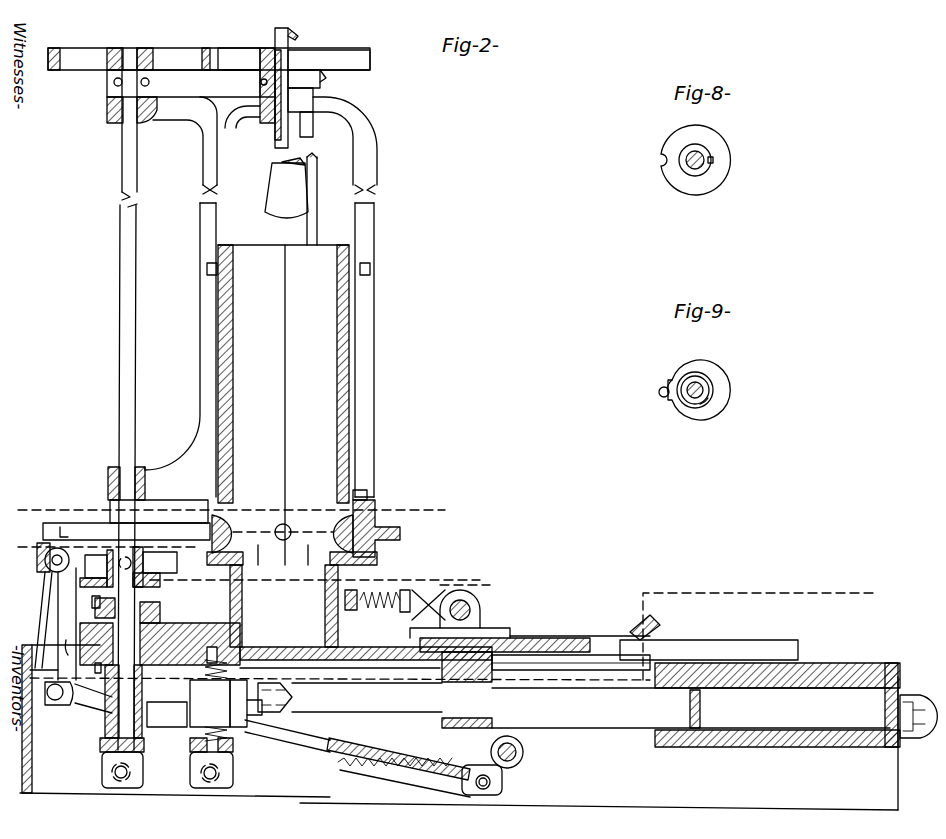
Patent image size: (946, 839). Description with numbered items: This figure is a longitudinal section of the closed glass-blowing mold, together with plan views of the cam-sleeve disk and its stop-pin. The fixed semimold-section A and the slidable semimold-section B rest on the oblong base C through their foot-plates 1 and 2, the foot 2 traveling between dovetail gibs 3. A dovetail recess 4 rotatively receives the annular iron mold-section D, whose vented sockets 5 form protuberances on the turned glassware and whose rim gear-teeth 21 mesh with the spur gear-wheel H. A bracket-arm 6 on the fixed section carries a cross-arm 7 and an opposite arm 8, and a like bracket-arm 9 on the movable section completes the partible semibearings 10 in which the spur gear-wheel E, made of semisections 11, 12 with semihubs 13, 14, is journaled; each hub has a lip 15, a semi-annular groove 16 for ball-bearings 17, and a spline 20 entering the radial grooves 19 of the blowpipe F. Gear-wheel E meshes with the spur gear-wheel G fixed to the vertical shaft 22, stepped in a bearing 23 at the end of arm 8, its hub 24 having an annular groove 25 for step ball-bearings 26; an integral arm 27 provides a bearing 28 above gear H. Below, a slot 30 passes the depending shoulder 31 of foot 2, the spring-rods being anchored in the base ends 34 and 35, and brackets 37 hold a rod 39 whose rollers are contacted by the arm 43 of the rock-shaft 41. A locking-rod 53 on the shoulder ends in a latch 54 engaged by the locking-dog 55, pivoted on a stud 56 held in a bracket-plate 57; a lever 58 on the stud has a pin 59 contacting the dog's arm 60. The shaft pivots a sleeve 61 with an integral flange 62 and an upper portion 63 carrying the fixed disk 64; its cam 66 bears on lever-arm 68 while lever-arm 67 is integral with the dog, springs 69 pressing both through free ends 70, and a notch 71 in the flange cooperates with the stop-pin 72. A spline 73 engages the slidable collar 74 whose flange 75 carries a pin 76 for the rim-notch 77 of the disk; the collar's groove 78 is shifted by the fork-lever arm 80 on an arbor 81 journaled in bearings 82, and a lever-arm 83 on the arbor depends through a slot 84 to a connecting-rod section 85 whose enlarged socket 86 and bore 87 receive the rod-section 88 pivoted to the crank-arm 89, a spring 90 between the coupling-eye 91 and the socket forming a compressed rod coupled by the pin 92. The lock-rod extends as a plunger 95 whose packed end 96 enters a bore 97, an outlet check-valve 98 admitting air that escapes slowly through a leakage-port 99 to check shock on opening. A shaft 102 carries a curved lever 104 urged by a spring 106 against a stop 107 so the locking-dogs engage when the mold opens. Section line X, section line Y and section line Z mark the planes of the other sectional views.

In FIG. 2, the foot-plate 1 is at (190, 647).
In FIG. 2, the foot-plate 2 is at (552, 638).
In FIG. 2, the dovetail gibs 3 is at (700, 640).
In FIG. 2, the dovetail recess 4 is at (236, 508).
In FIG. 2, the vented sockets 5 is at (330, 520).
In FIG. 2, the bracket-arm 6 is at (200, 318).
In FIG. 2, the cross-arm 7 is at (242, 121).
In FIG. 2, the arm 8 is at (168, 120).
In FIG. 2, the bracket-arm 9 is at (374, 330).
In FIG. 2, the semibearing 10 is at (316, 92).
In FIG. 2, the semisection of spur gear-wheel 11 is at (225, 48).
In FIG. 2, the semisection of spur gear-wheel 12 is at (342, 55).
In FIG. 2, the semihub 13 is at (266, 48).
In FIG. 2, the semihub 14 is at (326, 77).
In FIG. 2, the lip 15 is at (315, 124).
In FIG. 2, the semi-annular groove 16 is at (258, 75).
In FIG. 2, the ball-bearings 17 is at (260, 85).
In FIG. 2, the radial grooves 19 is at (304, 79).
In FIG. 2, the spline 20 is at (239, 59).
In FIG. 2, the gear-teeth 21 is at (375, 526).
In FIG. 2, the vertical shaft 22 is at (120, 257).
In FIG. 8, the vertical shaft 22 is at (702, 154).
In FIG. 9, the vertical shaft 22 is at (706, 390).
In FIG. 2, the bearing 23 is at (107, 118).
In FIG. 2, the hub 24 is at (158, 80).
In FIG. 2, the annular groove 25 is at (147, 50).
In FIG. 2, the step ball-bearings 26 is at (112, 82).
In FIG. 2, the integral arm 27 is at (165, 470).
In FIG. 2, the bearing 28 is at (108, 485).
In FIG. 2, the slot 30 is at (604, 655).
In FIG. 2, the depending shoulder 31 is at (450, 728).
In FIG. 2, the end of base 34 is at (32, 770).
In FIG. 2, the end of base 35 is at (748, 747).
In FIG. 2, the brackets 37 is at (480, 612).
In FIG. 2, the rod 39 is at (462, 600).
In FIG. 2, the rock-shaft 41 is at (524, 752).
In FIG. 2, the arm 43 is at (656, 622).
In FIG. 2, the locking-rod 53 is at (382, 704).
In FIG. 2, the latch 54 is at (275, 704).
In FIG. 2, the locking-dog 55 is at (250, 660).
In FIG. 2, the stud 56 is at (212, 647).
In FIG. 2, the bracket-plate 57 is at (233, 748).
In FIG. 2, the lever 58 is at (245, 712).
In FIG. 2, the pin 59 is at (245, 650).
In FIG. 2, the arm of locking-dog 60 is at (300, 698).
In FIG. 2, the sleeve 61 is at (100, 730).
In FIG. 8, the sleeve 61 is at (708, 170).
In FIG. 9, the sleeve 61 is at (704, 406).
In FIG. 2, the integral flange 62 is at (178, 640).
In FIG. 9, the integral flange 62 is at (672, 412).
In FIG. 2, the portion of sleeve 63 is at (160, 610).
In FIG. 9, the portion of sleeve 63 is at (710, 376).
In FIG. 2, the fixed disk 64 is at (113, 609).
In FIG. 8, the fixed disk 64 is at (672, 136).
In FIG. 2, the cam 66 is at (72, 710).
In FIG. 2, the lever-arm 67 is at (204, 664).
In FIG. 2, the lever-arm 68 is at (167, 720).
In FIG. 2, the springs 69 is at (240, 640).
In FIG. 2, the free end of spring 70 is at (217, 702).
In FIG. 2, the notch 71 is at (95, 667).
In FIG. 9, the notch 71 is at (670, 380).
In FIG. 2, the stop-pin 72 is at (93, 696).
In FIG. 9, the stop-pin 72 is at (660, 396).
In FIG. 2, the spline 73 is at (135, 546).
In FIG. 2, the collar 74 is at (150, 552).
In FIG. 2, the flange 75 is at (170, 584).
In FIG. 2, the pin 76 is at (40, 584).
In FIG. 2, the rim-notch 77 is at (92, 602).
In FIG. 8, the rim-notch 77 is at (656, 160).
In FIG. 2, the groove 78 is at (160, 562).
In FIG. 2, the fork-lever arm 80 is at (126, 531).
In FIG. 2, the arbor 81 is at (57, 548).
In FIG. 2, the bearings 82 is at (44, 600).
In FIG. 2, the lever-arm 83 is at (50, 610).
In FIG. 2, the slot 84 is at (70, 639).
In FIG. 2, the connecting-rod section 85 is at (300, 746).
In FIG. 2, the enlarged socket 86 is at (392, 758).
In FIG. 2, the bore 87 is at (356, 748).
In FIG. 2, the rod-section 88 is at (380, 776).
In FIG. 2, the crank-arm 89 is at (504, 786).
In FIG. 2, the spring 90 is at (474, 772).
In FIG. 2, the coupling-eye 91 is at (478, 766).
In FIG. 2, the pin 92 is at (344, 766).
In FIG. 2, the plunger 95 is at (620, 728).
In FIG. 2, the packed end 96 is at (702, 712).
In FIG. 2, the bore 97 is at (800, 690).
In FIG. 2, the outlet check-valve 98 is at (916, 694).
In FIG. 2, the leakage-port 99 is at (890, 662).
In FIG. 2, the shaft 102 is at (317, 186).
In FIG. 2, the curved lever 104 is at (352, 592).
In FIG. 2, the spring 106 is at (390, 596).
In FIG. 2, the stop 107 is at (436, 594).
In FIG. 2, the semimold-section A is at (233, 290).
In FIG. 2, the semimold-section B is at (337, 292).
In FIG. 2, the oblong base C is at (340, 672).
In FIG. 2, the annular iron mold-section D is at (315, 565).
In FIG. 2, the spur gear-wheel E is at (240, 48).
In FIG. 2, the blowpipe F is at (300, 36).
In FIG. 2, the spur gear-wheel G is at (85, 52).
In FIG. 2, the spur gear-wheel H is at (66, 516).
In FIG. 2, the section line X X is at (235, 519).
In FIG. 2, the section line Y Y is at (765, 636).
In FIG. 2, the section line Z Z is at (252, 565).